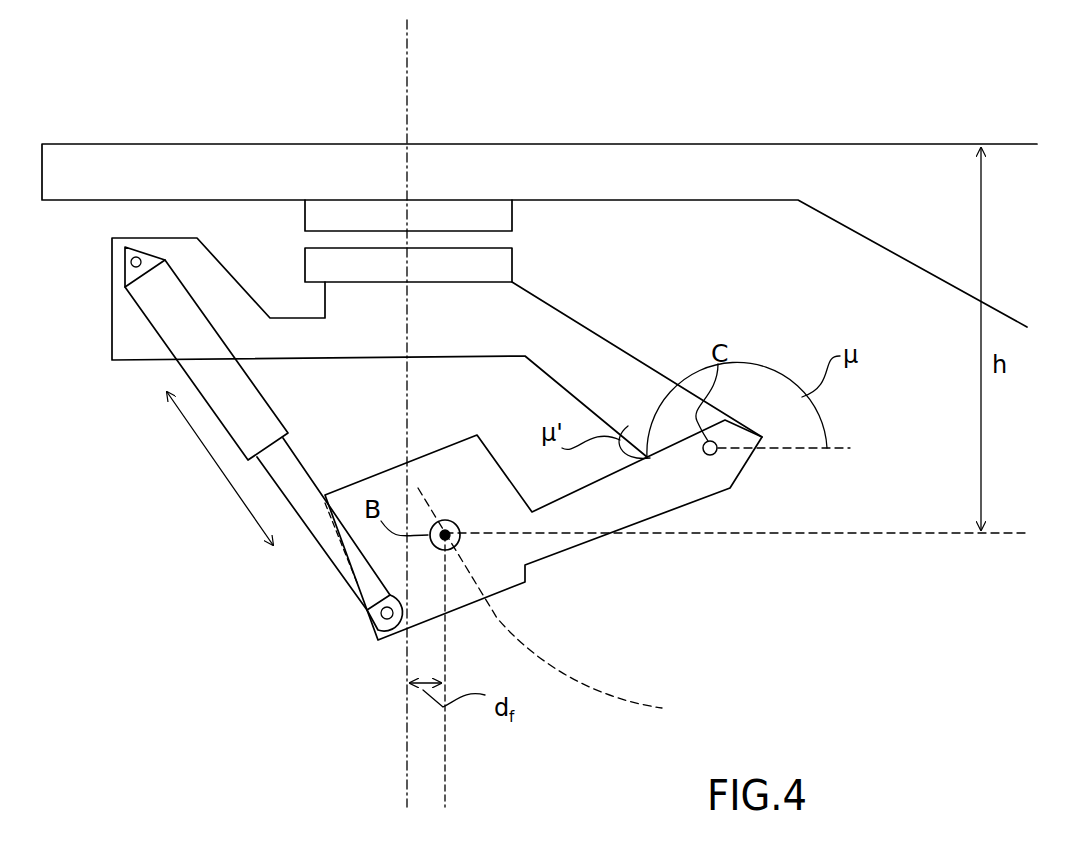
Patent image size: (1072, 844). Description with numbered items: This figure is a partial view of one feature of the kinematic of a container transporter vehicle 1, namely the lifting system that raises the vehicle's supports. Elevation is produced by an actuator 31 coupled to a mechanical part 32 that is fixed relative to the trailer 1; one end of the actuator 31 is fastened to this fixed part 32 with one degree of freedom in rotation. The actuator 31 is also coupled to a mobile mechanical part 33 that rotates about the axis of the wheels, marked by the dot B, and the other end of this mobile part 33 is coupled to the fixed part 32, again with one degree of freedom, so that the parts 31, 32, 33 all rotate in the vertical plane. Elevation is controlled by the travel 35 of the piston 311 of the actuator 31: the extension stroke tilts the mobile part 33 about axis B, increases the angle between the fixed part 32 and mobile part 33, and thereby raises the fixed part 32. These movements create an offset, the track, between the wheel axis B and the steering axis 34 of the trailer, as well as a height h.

The container transporter vehicle 1 is at (713, 166).
The actuator 31 is at (242, 393).
The piston 311 is at (300, 472).
The mechanical part fixed relative to the trailer 32 is at (548, 308).
The mobile mechanical part 33 is at (633, 502).
The steering axis of the trailer 34 is at (412, 72).
The travel of the piston 35 is at (223, 477).